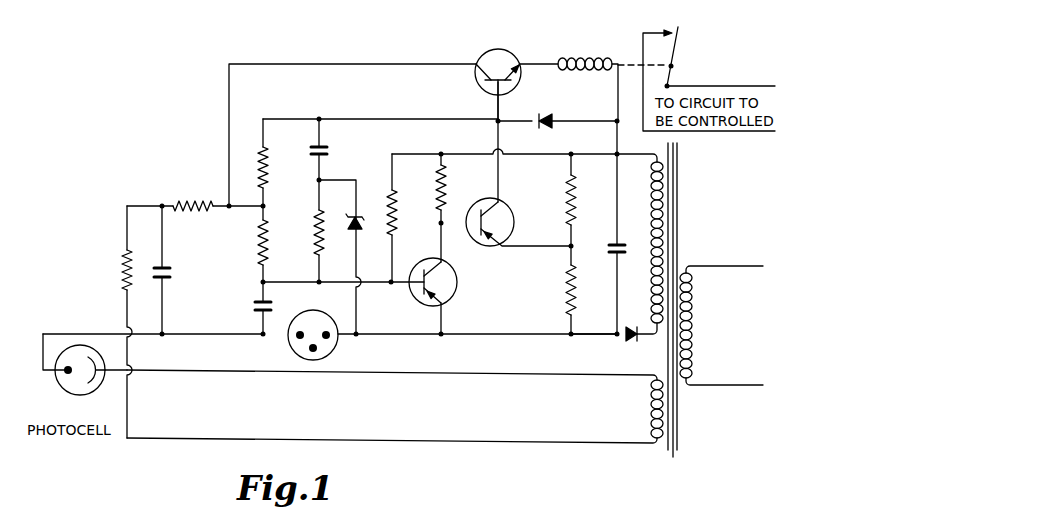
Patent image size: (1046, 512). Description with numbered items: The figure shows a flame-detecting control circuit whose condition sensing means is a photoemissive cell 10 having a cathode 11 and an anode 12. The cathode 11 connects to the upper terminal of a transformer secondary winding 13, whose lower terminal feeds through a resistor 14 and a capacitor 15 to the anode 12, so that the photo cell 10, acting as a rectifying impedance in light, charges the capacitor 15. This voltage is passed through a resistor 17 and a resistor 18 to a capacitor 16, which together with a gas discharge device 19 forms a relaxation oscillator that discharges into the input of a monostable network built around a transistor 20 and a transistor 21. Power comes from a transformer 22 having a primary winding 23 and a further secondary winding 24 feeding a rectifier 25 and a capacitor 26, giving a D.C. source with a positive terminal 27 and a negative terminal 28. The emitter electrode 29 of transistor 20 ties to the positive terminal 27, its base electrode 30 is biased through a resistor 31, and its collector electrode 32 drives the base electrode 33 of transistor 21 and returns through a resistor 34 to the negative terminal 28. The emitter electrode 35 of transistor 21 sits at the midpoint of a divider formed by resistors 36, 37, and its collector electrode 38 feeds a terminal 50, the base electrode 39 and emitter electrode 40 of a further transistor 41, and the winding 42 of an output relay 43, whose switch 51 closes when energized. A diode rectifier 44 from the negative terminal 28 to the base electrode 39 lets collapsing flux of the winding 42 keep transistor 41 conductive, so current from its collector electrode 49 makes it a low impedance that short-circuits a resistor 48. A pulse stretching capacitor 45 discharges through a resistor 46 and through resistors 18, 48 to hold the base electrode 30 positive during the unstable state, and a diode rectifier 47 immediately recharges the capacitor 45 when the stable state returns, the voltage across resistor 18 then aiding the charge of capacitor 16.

The photoemissive cell 10 is at (84, 392).
The cathode 11 is at (99, 360).
The anode 12 is at (63, 378).
The transformer secondary winding 13 is at (651, 411).
The resistor 14 is at (123, 262).
The capacitor 15 is at (168, 270).
The capacitor 16 is at (272, 303).
The resistor 17 is at (196, 202).
The resistor 18 is at (259, 238).
The gas discharge device 19 is at (336, 348).
The transistor 20 is at (446, 278).
The transistor 21 is at (513, 218).
The transformer 22 is at (673, 300).
The primary winding 23 is at (691, 341).
The secondary winding 24 is at (652, 220).
The rectifier 25 is at (631, 329).
The capacitor 26 is at (612, 244).
The positive terminal 27 is at (614, 338).
The negative terminal 28 is at (615, 153).
The emitter electrode 29 is at (450, 299).
The base electrode 30 is at (419, 277).
The resistor 31 is at (387, 205).
The collector electrode 32 is at (445, 270).
The base electrode 33 is at (480, 214).
The resistor 34 is at (436, 191).
The emitter electrode 35 is at (512, 240).
The resistor 36 is at (576, 201).
The resistor 37 is at (576, 292).
The collector electrode 38 is at (502, 206).
The base electrode 39 is at (490, 84).
The emitter electrode 40 is at (514, 56).
The transistor 41 is at (508, 67).
The relay winding 42 is at (601, 72).
The output relay 43 is at (666, 65).
The diode rectifier 44 is at (543, 128).
The pulse stretching capacitor 45 is at (314, 145).
The resistor 46 is at (316, 233).
The diode rectifier 47 is at (353, 233).
The resistor 48 is at (260, 165).
The collector electrode 49 is at (484, 62).
The terminal 50 is at (496, 123).
The switch 51 is at (676, 26).